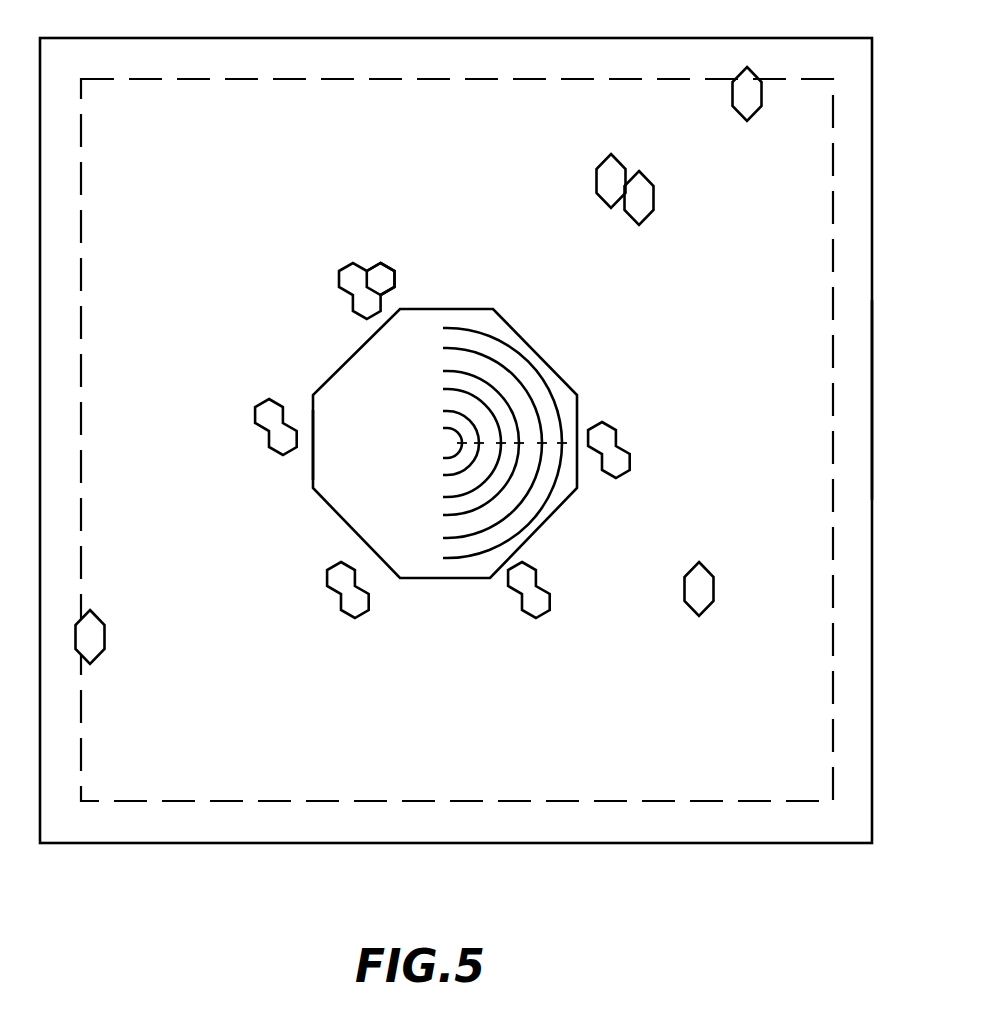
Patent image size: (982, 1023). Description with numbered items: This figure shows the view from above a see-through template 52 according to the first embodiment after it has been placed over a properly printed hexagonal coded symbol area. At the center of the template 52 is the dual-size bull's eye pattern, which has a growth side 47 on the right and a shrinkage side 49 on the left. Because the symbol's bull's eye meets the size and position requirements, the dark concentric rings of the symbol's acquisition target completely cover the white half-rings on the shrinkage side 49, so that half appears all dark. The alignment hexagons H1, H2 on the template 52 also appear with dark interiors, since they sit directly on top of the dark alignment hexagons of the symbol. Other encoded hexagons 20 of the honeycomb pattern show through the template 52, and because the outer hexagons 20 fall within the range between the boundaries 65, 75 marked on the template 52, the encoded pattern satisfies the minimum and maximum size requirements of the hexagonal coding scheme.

The boundary 65 is at (652, 40).
The boundary 75 is at (648, 80).
The template 52 is at (872, 401).
The growth side 47 is at (579, 413).
The shrinkage side 49 is at (313, 483).
The encoded hexagons 20 is at (617, 161).
The alignment hexagon H1 is at (363, 263).
The alignment hexagon H2 is at (395, 281).